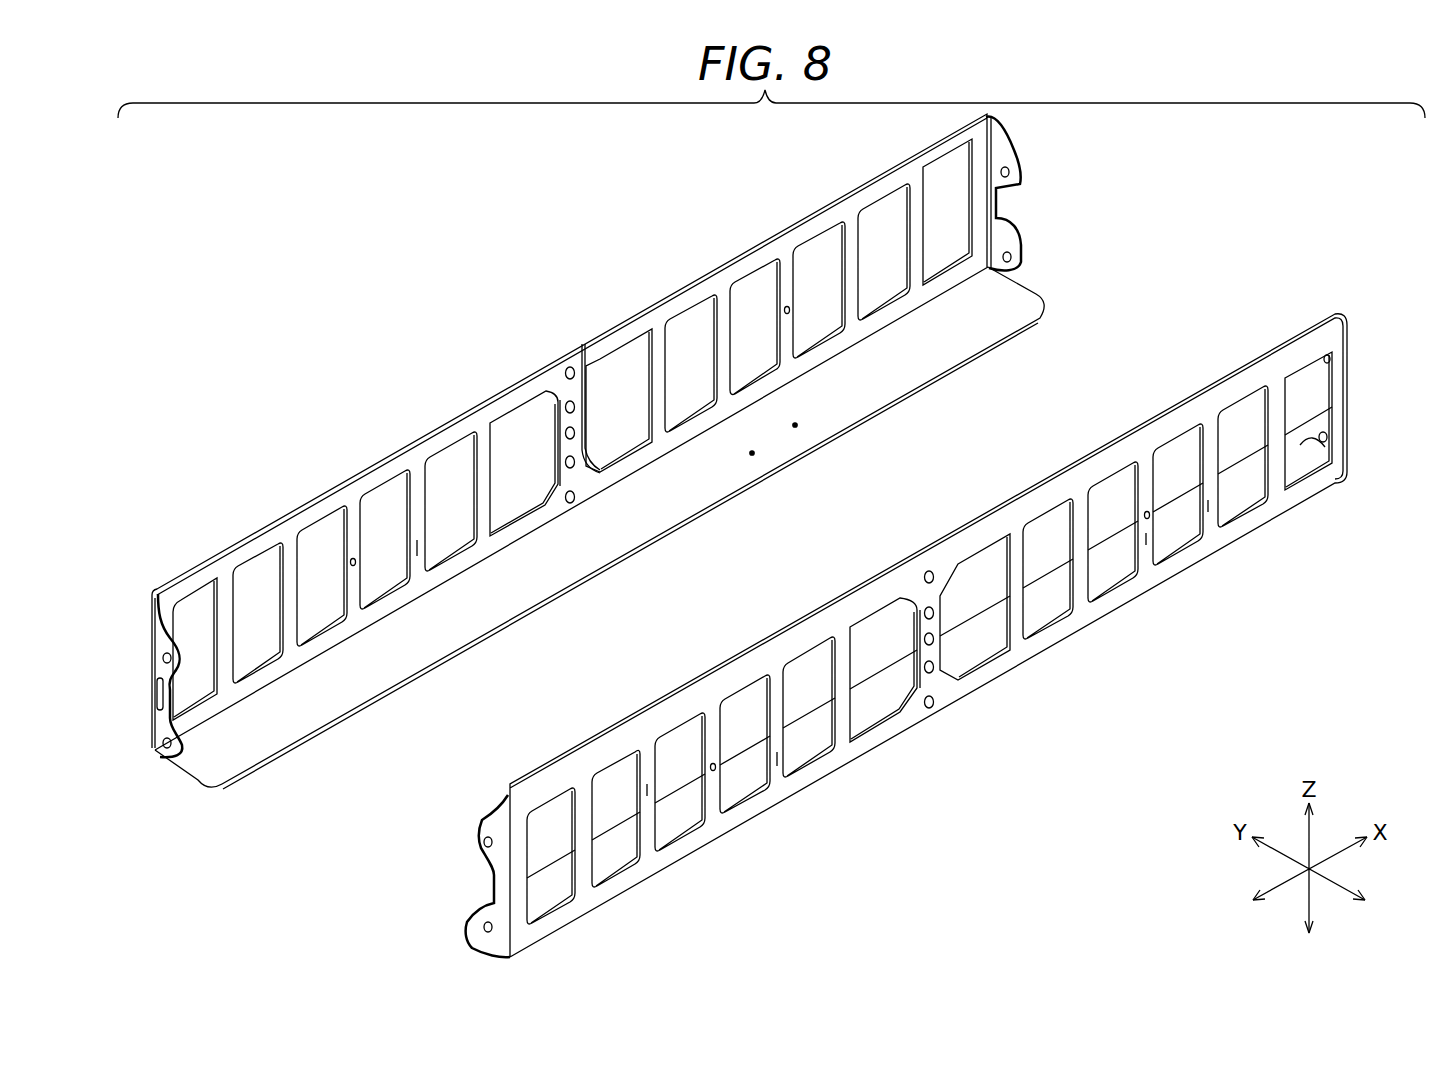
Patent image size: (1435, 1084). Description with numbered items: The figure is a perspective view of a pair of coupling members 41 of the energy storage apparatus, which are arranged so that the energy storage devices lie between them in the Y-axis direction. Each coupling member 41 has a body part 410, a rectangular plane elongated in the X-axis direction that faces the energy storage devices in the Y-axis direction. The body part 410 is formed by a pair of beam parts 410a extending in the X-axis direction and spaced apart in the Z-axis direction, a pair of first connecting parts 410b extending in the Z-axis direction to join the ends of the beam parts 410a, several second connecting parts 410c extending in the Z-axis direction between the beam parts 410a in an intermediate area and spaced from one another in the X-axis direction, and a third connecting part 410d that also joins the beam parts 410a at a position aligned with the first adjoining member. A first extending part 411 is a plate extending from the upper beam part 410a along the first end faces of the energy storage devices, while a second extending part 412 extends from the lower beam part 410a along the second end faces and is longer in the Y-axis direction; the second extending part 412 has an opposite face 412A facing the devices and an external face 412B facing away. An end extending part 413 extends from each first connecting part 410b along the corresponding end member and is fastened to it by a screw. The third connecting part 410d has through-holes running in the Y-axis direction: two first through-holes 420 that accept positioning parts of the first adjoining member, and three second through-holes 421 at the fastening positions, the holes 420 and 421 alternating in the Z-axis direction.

The coupling member 41 is at (446, 384).
The body part 410 is at (196, 535).
The beam part 410a is at (614, 480).
The first connecting part 410b is at (962, 205).
The second connecting part 410c is at (417, 548).
The third connecting part 410d is at (566, 433).
The first extending part 411 is at (740, 262).
The second extending part 412 is at (913, 388).
The opposite face 412A is at (797, 425).
The external face 412B is at (753, 453).
The end extending part 413 is at (1022, 178).
The first through-hole 420 is at (583, 362).
The second through-hole 421 is at (565, 404).